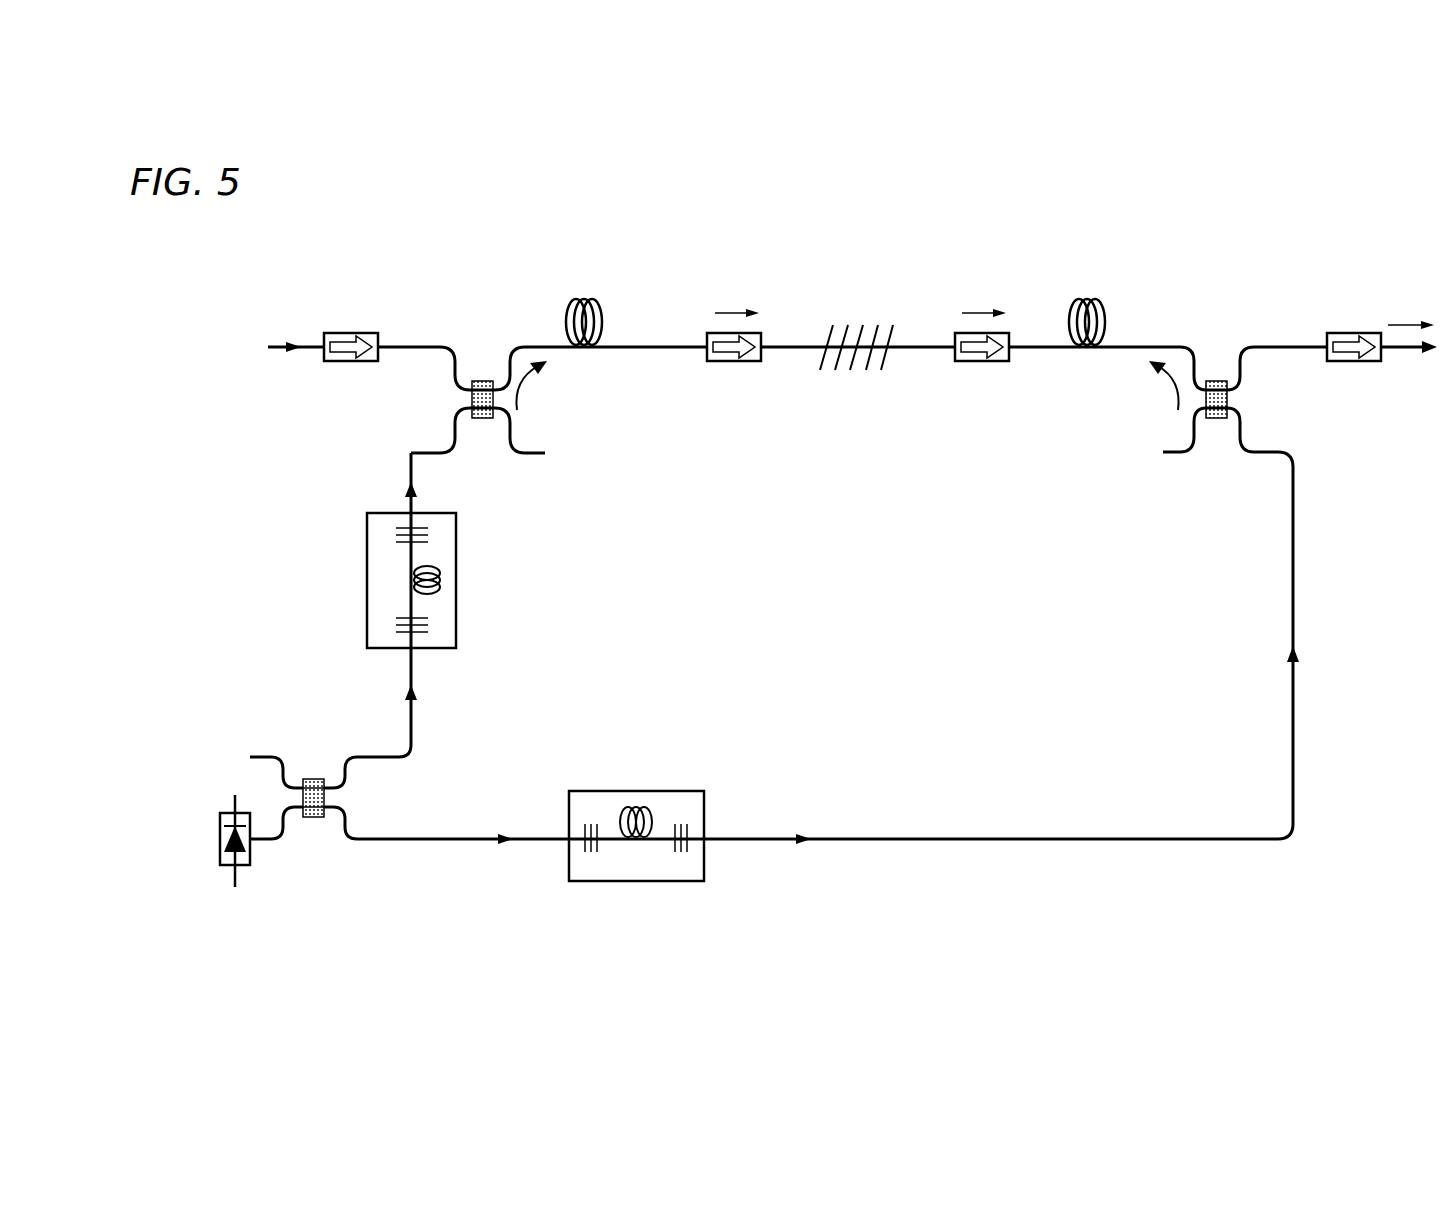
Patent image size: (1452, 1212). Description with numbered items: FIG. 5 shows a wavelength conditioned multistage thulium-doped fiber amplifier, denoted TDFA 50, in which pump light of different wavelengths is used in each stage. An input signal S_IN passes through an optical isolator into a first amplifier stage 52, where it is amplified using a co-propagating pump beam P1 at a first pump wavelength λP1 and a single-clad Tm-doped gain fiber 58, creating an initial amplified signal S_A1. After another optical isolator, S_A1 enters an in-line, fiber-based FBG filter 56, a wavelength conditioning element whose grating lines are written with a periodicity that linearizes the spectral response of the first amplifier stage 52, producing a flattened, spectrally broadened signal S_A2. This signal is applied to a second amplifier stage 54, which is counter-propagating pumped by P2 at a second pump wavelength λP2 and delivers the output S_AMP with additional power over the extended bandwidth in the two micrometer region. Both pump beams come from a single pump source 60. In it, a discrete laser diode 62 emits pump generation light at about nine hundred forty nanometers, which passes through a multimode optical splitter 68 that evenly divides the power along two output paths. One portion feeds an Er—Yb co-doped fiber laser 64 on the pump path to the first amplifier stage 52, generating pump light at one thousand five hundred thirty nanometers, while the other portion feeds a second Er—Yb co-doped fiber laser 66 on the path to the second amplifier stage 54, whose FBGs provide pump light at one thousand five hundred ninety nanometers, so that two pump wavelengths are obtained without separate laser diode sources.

The TDFA 50 is at (262, 250).
The first amplifier stage 52 is at (637, 258).
The second amplifier stage 54 is at (1243, 258).
The FBG filter 56 is at (863, 325).
The single-clad Tm-doped gain fiber 58 is at (600, 331).
The pump source 60 is at (710, 916).
The laser diode 62 is at (221, 838).
The Er—Yb co-doped fiber laser 64 is at (367, 578).
The Er—Yb co-doped fiber laser 66 is at (655, 791).
The multimode optical splitter 68 is at (316, 779).